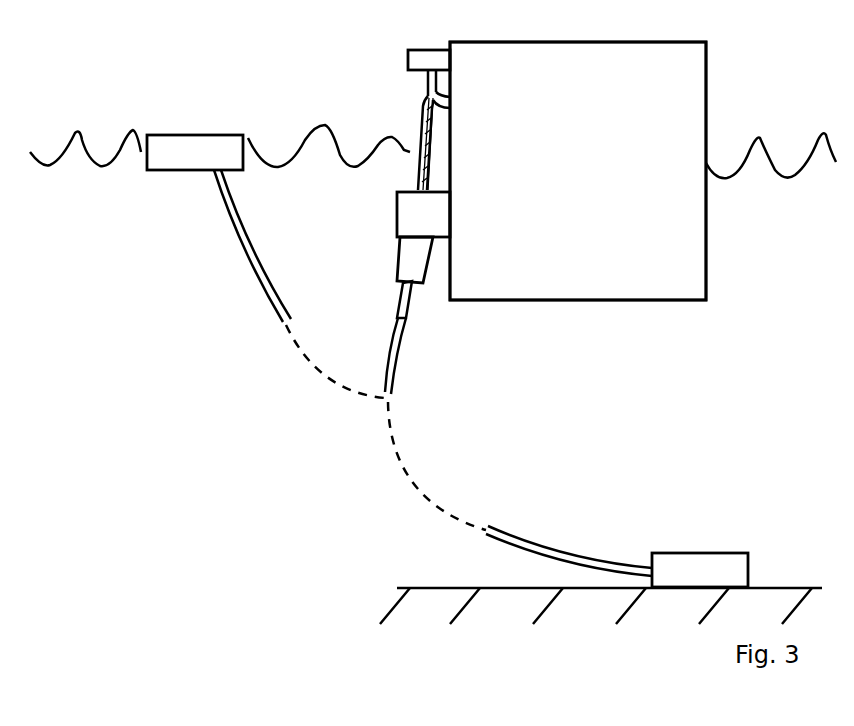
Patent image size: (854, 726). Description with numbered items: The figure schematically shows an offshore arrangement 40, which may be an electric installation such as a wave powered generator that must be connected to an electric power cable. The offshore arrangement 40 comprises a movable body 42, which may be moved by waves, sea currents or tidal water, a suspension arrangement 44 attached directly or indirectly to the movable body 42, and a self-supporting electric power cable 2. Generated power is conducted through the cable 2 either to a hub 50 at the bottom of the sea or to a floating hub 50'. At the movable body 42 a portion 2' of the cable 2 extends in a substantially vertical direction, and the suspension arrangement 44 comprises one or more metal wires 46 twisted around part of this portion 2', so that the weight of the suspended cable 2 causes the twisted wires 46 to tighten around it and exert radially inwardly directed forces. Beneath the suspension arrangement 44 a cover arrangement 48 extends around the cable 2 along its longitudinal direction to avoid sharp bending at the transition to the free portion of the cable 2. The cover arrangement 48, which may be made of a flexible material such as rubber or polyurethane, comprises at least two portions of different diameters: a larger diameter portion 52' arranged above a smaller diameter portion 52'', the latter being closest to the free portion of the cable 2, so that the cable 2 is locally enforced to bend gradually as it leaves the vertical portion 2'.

The self-supporting electric power cable 2 is at (401, 373).
The portion of the self-supporting electric power cable 2' is at (373, 149).
The offshore arrangement 40 is at (724, 58).
The movable body 42 is at (578, 171).
The suspension arrangement 44 is at (392, 88).
The metal wires 46 is at (424, 134).
The cover arrangement 48 is at (388, 282).
The hub 50 is at (700, 570).
The floating hub 50' is at (195, 152).
The larger diameter portion 52' is at (375, 260).
The smaller diameter portion 52'' is at (433, 327).